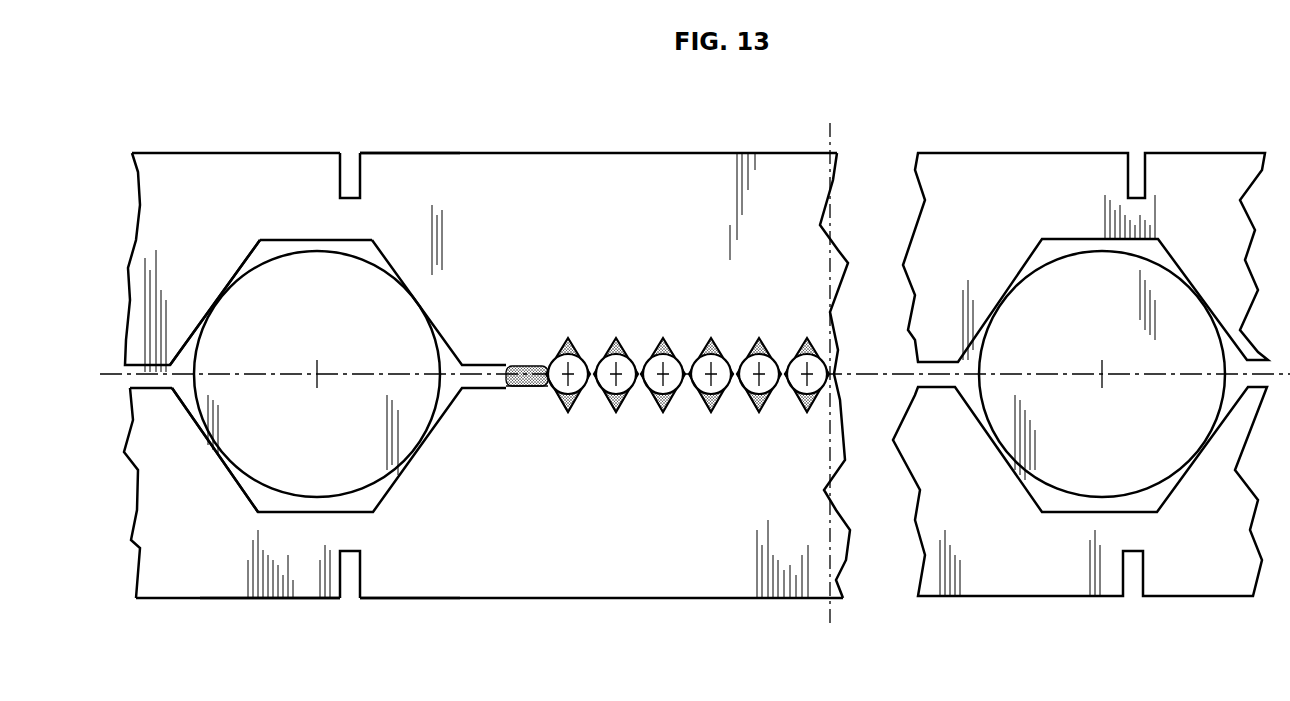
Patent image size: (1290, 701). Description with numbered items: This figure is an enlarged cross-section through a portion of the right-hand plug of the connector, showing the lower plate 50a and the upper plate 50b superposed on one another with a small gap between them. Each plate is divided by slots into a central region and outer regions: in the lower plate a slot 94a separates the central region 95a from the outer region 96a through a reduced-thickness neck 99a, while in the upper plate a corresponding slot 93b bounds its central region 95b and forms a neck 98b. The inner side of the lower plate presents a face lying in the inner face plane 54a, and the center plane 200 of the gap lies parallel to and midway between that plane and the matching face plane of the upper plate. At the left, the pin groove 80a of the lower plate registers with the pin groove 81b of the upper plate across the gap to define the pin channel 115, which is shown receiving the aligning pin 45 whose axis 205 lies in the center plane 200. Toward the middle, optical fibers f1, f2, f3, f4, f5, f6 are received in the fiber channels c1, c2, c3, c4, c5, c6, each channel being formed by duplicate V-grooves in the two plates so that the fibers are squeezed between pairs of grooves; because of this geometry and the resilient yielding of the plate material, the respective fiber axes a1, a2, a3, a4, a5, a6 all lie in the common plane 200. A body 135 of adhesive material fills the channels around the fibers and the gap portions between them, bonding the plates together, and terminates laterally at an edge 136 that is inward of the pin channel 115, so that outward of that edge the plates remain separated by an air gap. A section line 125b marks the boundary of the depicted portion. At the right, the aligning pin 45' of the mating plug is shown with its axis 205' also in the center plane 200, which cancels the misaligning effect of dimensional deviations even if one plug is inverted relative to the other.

The upper plate 50b is at (720, 165).
The lower plate 50a is at (705, 598).
The central region of upper plate 95b is at (548, 172).
The central region of lower plate 95a is at (590, 568).
The slot of upper plate 93b is at (350, 163).
The slot of lower plate 94a is at (352, 583).
The neck of upper plate 98b is at (358, 214).
The outer region of lower plate 96a is at (233, 578).
The neck of lower plate 99a is at (365, 545).
The pin channel 115 is at (290, 248).
The pin groove of upper plate 81b is at (253, 258).
The pin groove of lower plate 80a is at (256, 512).
The inner face plane 54a is at (112, 391).
The aligning pin 45 is at (293, 351).
The axis of aligning pin 205 is at (341, 361).
The center plane 200 is at (108, 363).
The section plane 125b is at (830, 130).
The body of adhesive material 135 is at (535, 367).
The edge of adhesive body 136 is at (508, 387).
The fiber axis a1 is at (564, 348).
The fiber channel c1 is at (572, 405).
The optical fiber f1 is at (558, 405).
The fiber axis a2 is at (612, 348).
The fiber channel c2 is at (620, 405).
The optical fiber f2 is at (606, 405).
The fiber axis a3 is at (659, 348).
The fiber channel c3 is at (667, 405).
The optical fiber f3 is at (653, 405).
The fiber axis a4 is at (707, 348).
The fiber channel c4 is at (715, 405).
The optical fiber f4 is at (701, 405).
The fiber axis a5 is at (755, 348).
The fiber channel c5 is at (763, 405).
The optical fiber f5 is at (749, 405).
The fiber axis a6 is at (803, 348).
The fiber channel c6 is at (811, 405).
The optical fiber f6 is at (797, 405).
The aligning pin 45' is at (1080, 374).
The axis of aligning pin 205' is at (1129, 363).